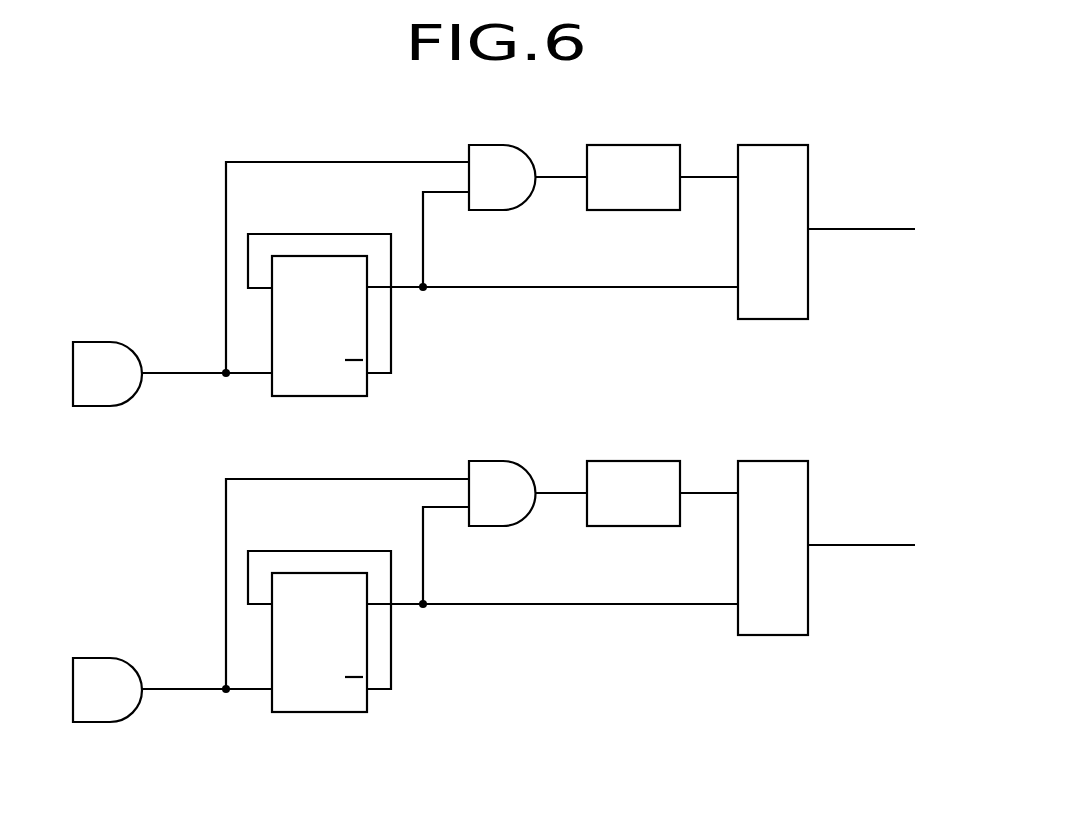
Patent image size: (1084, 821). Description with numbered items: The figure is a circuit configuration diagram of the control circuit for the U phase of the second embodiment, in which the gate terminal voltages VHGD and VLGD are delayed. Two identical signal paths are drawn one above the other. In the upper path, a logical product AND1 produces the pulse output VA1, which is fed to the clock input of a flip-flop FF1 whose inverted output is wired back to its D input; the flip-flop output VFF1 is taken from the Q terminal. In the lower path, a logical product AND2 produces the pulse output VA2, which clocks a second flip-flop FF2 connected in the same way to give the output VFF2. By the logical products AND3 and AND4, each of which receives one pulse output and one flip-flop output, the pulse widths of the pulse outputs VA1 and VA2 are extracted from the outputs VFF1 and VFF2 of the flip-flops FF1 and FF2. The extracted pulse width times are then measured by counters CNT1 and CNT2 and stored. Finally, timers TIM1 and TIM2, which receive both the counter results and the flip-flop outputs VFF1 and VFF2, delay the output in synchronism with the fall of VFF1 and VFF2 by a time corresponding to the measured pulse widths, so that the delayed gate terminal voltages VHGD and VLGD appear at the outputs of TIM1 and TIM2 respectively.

The logical product AND1 is at (100, 357).
The logical product AND2 is at (100, 673).
The logical product AND3 is at (492, 195).
The logical product AND4 is at (490, 475).
The flip-flop FF1 is at (318, 268).
The flip-flop FF2 is at (322, 713).
The counter CNT1 is at (658, 193).
The counter CNT2 is at (635, 475).
The timer TIM1 is at (773, 307).
The timer TIM2 is at (775, 473).
The pulse output VA1 is at (207, 358).
The pulse output VA2 is at (207, 674).
The output of the flip-flop VFF1 is at (552, 273).
The output of the flip-flop VFF2 is at (552, 589).
The gate terminal voltage VHGD is at (861, 213).
The gate terminal voltage VLGD is at (861, 529).